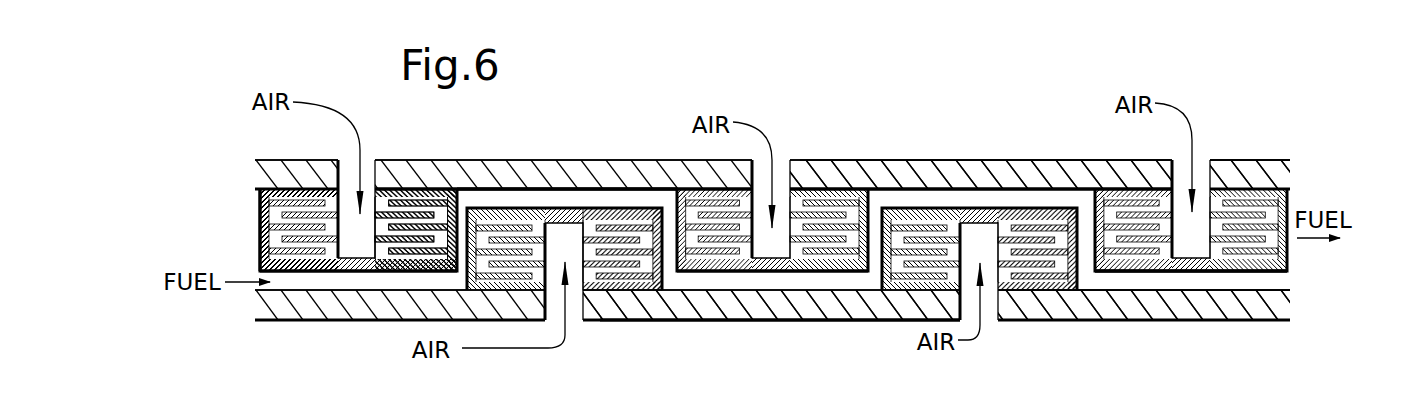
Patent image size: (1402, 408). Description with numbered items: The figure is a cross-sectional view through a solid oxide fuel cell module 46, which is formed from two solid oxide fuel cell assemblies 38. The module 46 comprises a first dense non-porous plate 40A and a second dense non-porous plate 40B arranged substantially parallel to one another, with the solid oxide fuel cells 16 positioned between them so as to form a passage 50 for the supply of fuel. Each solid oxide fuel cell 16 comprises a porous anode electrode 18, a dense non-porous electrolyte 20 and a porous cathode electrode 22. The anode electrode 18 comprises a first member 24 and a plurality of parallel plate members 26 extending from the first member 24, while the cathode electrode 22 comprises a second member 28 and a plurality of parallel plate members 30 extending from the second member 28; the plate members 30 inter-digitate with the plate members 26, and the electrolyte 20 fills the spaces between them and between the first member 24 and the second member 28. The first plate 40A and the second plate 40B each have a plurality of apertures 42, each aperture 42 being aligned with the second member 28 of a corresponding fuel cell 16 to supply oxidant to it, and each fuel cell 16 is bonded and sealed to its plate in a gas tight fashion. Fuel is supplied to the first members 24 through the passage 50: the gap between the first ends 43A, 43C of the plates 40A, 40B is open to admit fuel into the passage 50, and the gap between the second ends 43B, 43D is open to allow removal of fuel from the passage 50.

The solid oxide fuel cell 16 is at (618, 188).
The porous anode electrode 18 is at (262, 189).
The dense non-porous electrolyte 20 is at (440, 268).
The porous cathode electrode 22 is at (382, 186).
The first member 24 is at (262, 236).
The parallel plate members 26 is at (289, 192).
The second member 28 is at (556, 224).
The parallel plate members 30 is at (320, 194).
The solid oxide fuel cell assembly 38 is at (881, 167).
The first dense non-porous plate 40A is at (967, 168).
The second dense non-porous plate 40B is at (812, 310).
The apertures 42 is at (368, 168).
The first end 43A is at (262, 173).
The second end 43B is at (1273, 172).
The first end 43C is at (258, 310).
The second end 43D is at (1278, 303).
The solid oxide fuel cell module 46 is at (1278, 111).
The passage 50 is at (492, 200).